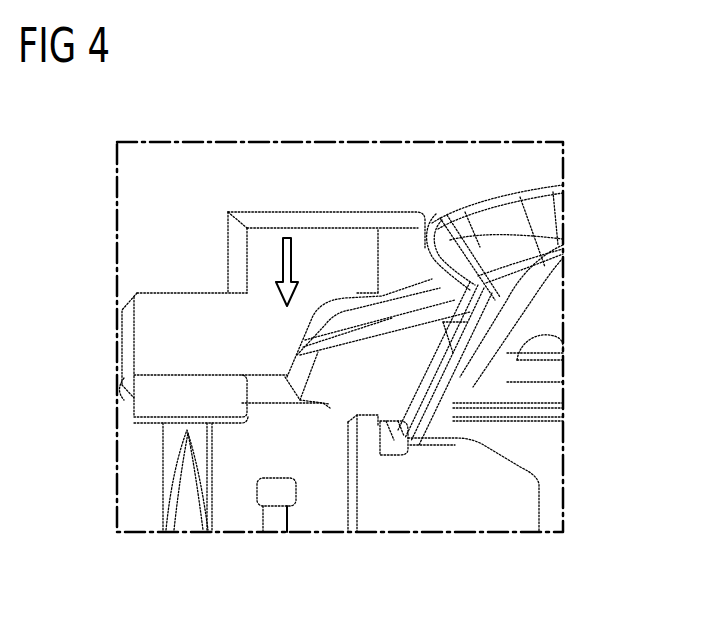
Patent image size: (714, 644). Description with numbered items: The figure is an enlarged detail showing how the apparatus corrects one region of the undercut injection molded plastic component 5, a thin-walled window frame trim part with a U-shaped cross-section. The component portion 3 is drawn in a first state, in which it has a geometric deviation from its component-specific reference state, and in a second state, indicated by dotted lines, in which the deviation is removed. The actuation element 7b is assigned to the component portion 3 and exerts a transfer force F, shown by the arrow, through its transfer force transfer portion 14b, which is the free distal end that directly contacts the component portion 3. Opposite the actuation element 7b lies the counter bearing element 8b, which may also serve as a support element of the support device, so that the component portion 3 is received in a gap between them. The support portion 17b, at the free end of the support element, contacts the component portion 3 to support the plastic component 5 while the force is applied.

The component portion 3 is at (320, 318).
The plastic component 5 is at (548, 202).
The actuation element 7b is at (314, 244).
The transfer force transfer portion 14b is at (357, 297).
The support portion 17b is at (384, 433).
The counter bearing element 8b is at (465, 500).
The transfer force F is at (282, 260).